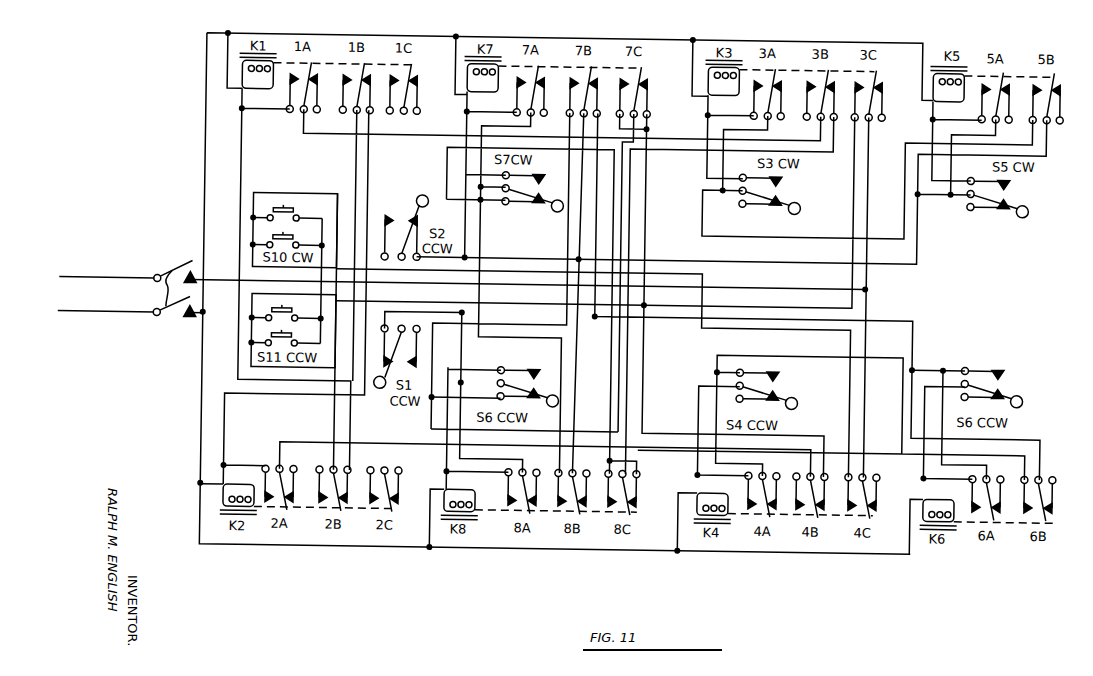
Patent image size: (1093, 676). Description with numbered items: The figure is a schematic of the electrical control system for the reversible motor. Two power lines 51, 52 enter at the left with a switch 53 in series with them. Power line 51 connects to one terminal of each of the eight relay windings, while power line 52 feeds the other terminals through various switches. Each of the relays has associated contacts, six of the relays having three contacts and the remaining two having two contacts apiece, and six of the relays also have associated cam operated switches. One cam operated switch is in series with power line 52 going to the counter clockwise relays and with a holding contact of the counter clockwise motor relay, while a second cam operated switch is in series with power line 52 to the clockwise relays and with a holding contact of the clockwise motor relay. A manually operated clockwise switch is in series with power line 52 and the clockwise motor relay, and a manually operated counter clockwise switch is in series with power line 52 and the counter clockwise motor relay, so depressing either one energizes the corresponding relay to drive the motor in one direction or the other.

The power line 51 is at (98, 319).
The power line 52 is at (90, 284).
The switch 53 is at (163, 295).